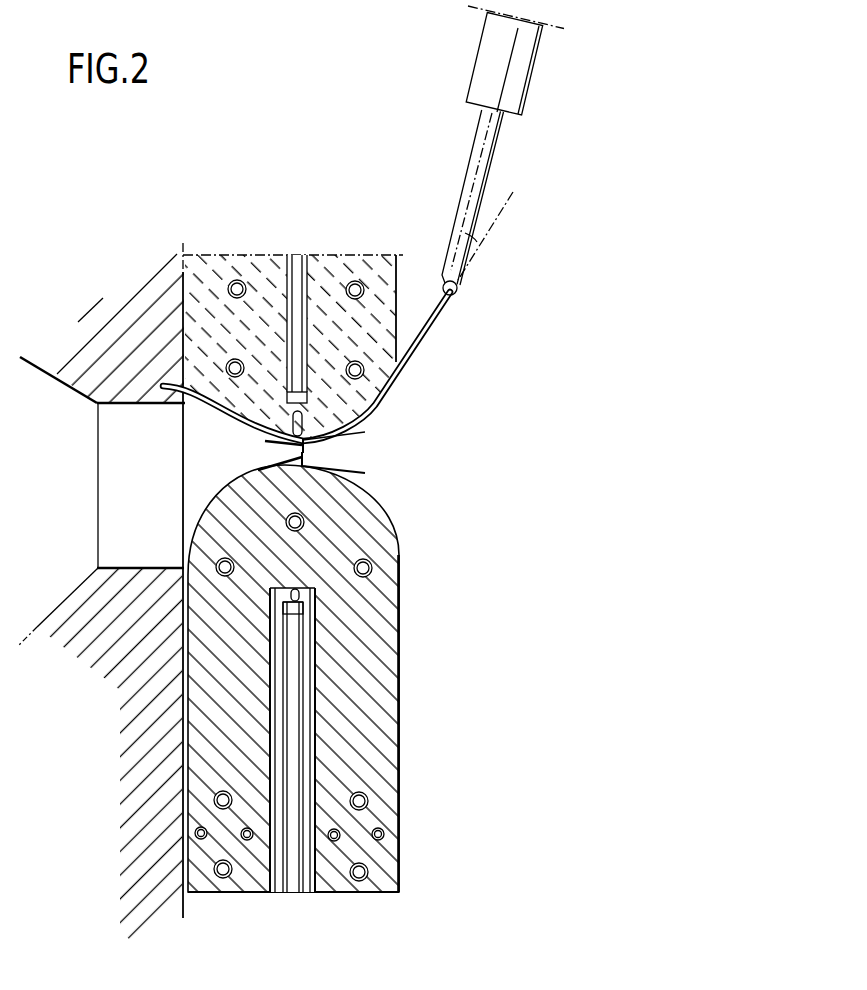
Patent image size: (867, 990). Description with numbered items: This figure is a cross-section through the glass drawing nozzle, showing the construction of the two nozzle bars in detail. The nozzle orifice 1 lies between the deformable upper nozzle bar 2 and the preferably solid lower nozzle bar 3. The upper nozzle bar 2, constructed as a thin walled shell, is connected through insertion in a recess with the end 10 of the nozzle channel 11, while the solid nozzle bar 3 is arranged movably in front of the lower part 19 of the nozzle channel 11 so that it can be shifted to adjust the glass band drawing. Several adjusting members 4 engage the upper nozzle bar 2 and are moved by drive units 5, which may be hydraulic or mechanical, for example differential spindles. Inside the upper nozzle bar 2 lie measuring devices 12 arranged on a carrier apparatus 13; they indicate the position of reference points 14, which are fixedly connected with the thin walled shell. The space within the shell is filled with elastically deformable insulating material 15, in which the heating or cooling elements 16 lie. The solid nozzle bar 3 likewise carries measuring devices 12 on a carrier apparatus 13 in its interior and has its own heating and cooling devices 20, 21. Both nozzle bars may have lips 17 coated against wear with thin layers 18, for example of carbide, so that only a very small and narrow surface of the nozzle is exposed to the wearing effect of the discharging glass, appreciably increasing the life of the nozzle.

The nozzle orifice 1 is at (307, 455).
The upper nozzle bar 2 is at (402, 374).
The lower nozzle bar 3 is at (367, 540).
The adjusting member 4 is at (488, 158).
The drive unit 5 is at (515, 76).
The end of the nozzle channel 10 is at (85, 378).
The nozzle channel 11 is at (110, 483).
The measuring device 12 is at (303, 398).
The carrier apparatus 13 is at (298, 290).
The reference point 14 is at (303, 417).
The insulating material 15 is at (204, 272).
The heating or cooling element 16 is at (242, 282).
The lip 17 is at (268, 458).
The thin layer 18 is at (308, 443).
The lower part of the nozzle channel 19 is at (72, 613).
The heating device 20 is at (305, 522).
The cooling device 21 is at (384, 835).